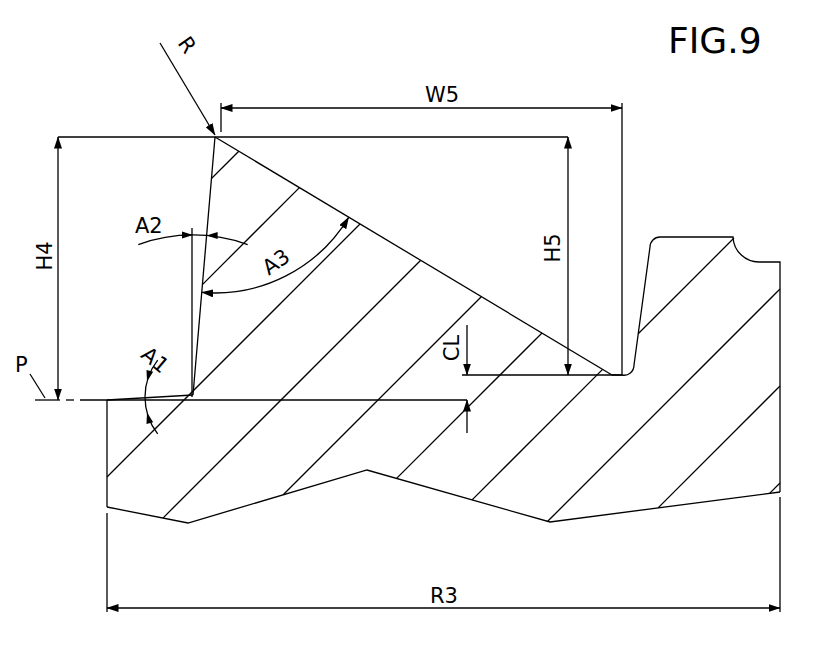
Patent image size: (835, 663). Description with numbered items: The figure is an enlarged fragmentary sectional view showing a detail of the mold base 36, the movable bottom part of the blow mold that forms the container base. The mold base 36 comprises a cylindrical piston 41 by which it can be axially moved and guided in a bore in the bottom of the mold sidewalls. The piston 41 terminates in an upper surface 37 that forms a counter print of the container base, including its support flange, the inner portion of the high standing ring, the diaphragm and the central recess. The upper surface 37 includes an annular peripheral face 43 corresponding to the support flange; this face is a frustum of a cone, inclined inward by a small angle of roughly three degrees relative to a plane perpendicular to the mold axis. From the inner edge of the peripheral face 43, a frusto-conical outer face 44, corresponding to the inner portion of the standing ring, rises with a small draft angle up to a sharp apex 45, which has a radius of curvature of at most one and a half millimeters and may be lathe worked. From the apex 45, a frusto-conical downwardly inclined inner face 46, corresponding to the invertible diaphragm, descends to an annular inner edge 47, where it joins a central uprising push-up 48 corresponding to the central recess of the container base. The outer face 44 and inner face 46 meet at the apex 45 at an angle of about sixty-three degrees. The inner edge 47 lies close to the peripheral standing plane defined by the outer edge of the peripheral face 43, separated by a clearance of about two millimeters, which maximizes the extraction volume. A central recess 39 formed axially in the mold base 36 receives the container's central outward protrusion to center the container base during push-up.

The mold base 36 is at (698, 168).
The upper surface 37 is at (470, 245).
The central recess 39 is at (760, 260).
The cylindrical piston 41 is at (107, 463).
The annular peripheral face 43 is at (133, 398).
The frusto-conical outer face 44 is at (207, 200).
The sharp apex 45 is at (213, 138).
The frusto-conical downwardly inclined inner face 46 is at (388, 238).
The annular inner edge 47 is at (632, 378).
The central uprising push-up 48 is at (718, 235).